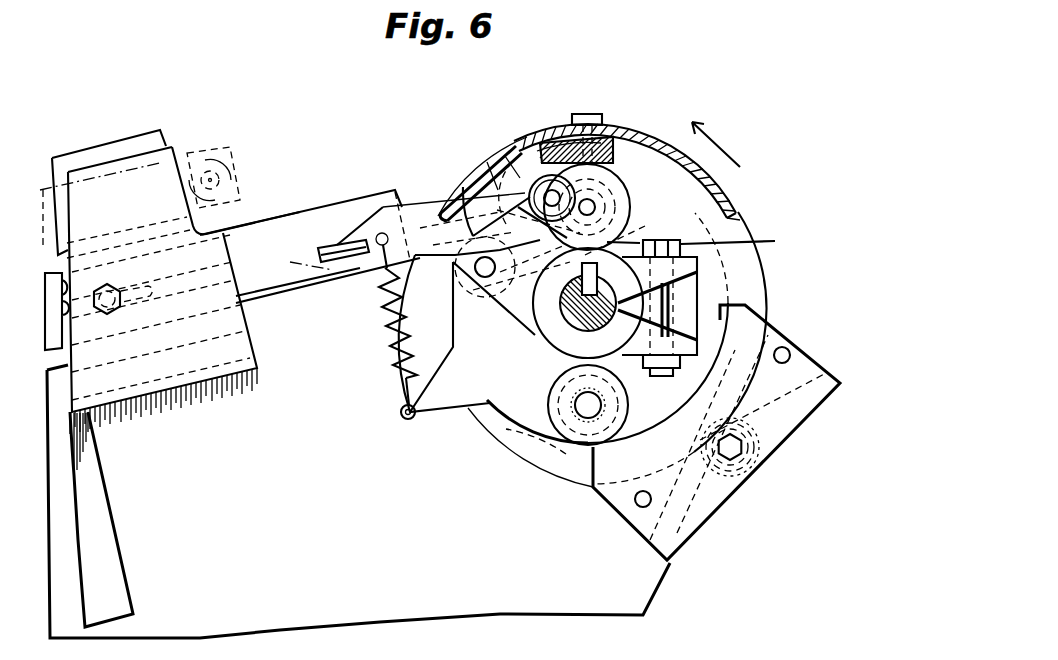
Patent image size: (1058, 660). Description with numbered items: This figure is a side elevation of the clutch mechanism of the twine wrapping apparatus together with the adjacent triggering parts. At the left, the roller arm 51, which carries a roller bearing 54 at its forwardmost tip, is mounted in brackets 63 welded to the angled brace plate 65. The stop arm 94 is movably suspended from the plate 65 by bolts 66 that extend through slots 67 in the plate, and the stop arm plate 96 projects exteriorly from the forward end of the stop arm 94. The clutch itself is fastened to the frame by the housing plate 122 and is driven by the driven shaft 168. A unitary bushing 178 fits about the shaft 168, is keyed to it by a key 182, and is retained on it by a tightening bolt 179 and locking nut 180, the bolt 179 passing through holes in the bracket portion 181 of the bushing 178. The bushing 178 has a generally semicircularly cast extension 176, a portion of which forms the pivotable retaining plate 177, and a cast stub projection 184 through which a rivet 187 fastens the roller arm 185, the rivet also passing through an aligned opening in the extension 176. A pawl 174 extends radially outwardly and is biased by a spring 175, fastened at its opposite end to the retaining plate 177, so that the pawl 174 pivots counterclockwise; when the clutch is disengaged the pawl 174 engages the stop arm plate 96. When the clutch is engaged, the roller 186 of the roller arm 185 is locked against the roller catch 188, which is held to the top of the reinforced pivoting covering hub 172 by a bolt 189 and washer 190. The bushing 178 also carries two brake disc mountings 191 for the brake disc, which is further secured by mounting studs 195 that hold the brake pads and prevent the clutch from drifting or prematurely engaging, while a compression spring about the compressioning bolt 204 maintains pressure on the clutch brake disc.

The roller arm 51 is at (222, 148).
The roller bearing 54 is at (228, 173).
The brackets 63 is at (150, 130).
The angled brace plate 65 is at (200, 378).
The bolts 66 is at (125, 306).
The slots 67 is at (98, 284).
The stop arm 94 is at (298, 207).
The stop arm plate 96 is at (332, 248).
The housing plate 122 is at (655, 595).
The driven shaft 168 is at (560, 360).
The covering hub 172 is at (728, 190).
The pawl 174 is at (356, 225).
The spring 175 is at (387, 360).
The semicircularly casted extension 176 is at (522, 135).
The pivotable retaining plate 177 is at (467, 423).
The unitary bushing 178 is at (533, 323).
The tightening bolt 179 is at (751, 242).
The locking nut 180 is at (682, 360).
The bracket portion 181 is at (680, 325).
The key 182 is at (545, 292).
The stub projection 184 is at (462, 190).
The roller arm 185 is at (490, 165).
The roller 186 is at (552, 130).
The rivet 187 is at (478, 262).
The roller catch 188 is at (645, 133).
The bolt 189 is at (588, 112).
The washer 190 is at (606, 130).
The brake disc mountings 191 is at (628, 405).
The mounting studs 195 is at (636, 508).
The compressioning bolt 204 is at (748, 450).